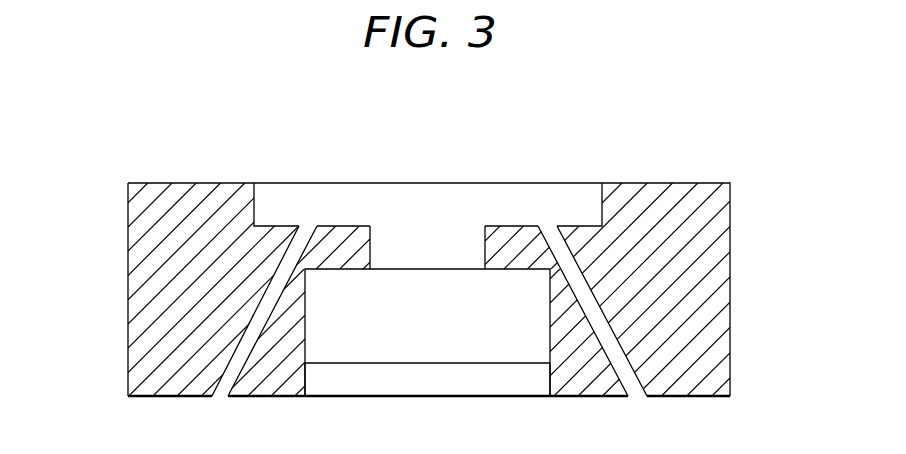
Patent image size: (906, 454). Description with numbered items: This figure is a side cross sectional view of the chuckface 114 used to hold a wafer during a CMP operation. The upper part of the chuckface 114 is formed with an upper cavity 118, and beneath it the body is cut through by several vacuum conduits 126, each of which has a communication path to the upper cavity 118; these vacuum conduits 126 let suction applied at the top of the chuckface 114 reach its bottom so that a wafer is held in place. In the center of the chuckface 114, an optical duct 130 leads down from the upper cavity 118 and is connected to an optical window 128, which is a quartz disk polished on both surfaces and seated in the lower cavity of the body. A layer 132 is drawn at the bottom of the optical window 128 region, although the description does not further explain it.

The chuckface 114 is at (133, 305).
The upper cavity 118 is at (523, 200).
The vacuum conduit 126 is at (618, 357).
The optical window 128 is at (485, 345).
The optical duct 130 is at (388, 245).
The layer 132 is at (412, 378).